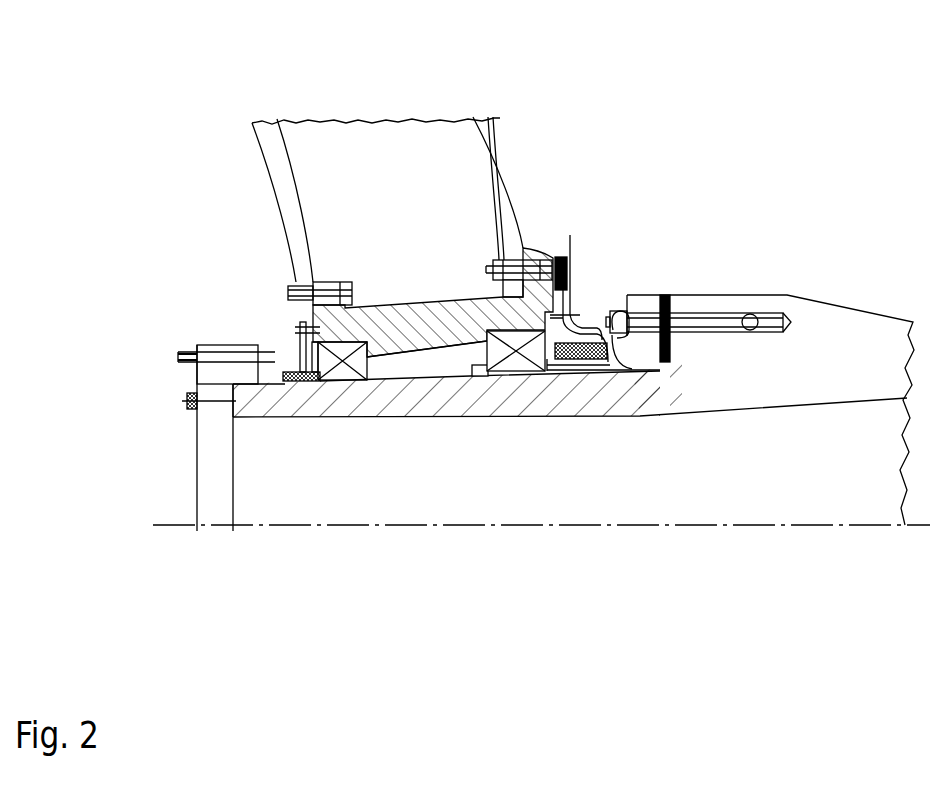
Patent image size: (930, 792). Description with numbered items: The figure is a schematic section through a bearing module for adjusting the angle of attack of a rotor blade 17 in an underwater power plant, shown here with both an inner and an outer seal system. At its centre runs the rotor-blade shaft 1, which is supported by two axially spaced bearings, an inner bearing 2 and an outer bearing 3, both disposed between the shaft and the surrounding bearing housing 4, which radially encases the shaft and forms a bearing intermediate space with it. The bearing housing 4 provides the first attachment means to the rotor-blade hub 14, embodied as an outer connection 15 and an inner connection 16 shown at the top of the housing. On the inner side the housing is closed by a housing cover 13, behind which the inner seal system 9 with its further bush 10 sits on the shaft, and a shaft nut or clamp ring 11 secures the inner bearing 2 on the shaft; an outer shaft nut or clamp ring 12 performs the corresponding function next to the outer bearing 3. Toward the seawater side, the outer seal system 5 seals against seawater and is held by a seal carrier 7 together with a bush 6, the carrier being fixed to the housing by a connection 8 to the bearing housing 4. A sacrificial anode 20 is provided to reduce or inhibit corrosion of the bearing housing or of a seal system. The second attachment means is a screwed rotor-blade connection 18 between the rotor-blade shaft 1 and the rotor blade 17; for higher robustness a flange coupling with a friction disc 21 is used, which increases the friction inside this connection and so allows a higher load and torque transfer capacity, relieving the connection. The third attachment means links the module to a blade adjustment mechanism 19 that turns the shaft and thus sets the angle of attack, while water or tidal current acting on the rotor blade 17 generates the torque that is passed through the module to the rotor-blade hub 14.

The rotor-blade shaft 1 is at (427, 401).
The inner bearing 2 is at (345, 376).
The outer bearing 3 is at (519, 366).
The bearing housing 4 is at (407, 333).
The outer seal system 5 is at (580, 360).
The bush 6 is at (590, 366).
The seal carrier 7 is at (605, 362).
The connection to the bearing housing 8 is at (563, 265).
The inner seal system 9 is at (302, 365).
The further bush 10 is at (292, 382).
The shaft nut or clamp ring 11 is at (296, 376).
The outer shaft nut or clamp ring 12 is at (475, 375).
The housing cover 13 is at (302, 340).
The rotor-blade hub 14 is at (314, 150).
The outer connection 15 is at (512, 272).
The inner connection 16 is at (330, 287).
The rotor blade 17 is at (845, 360).
The screwed rotor-blade connection 18 is at (712, 323).
The blade adjustment mechanism 19 is at (218, 357).
The sacrificial anode 20 is at (560, 270).
The friction disc 21 is at (670, 292).